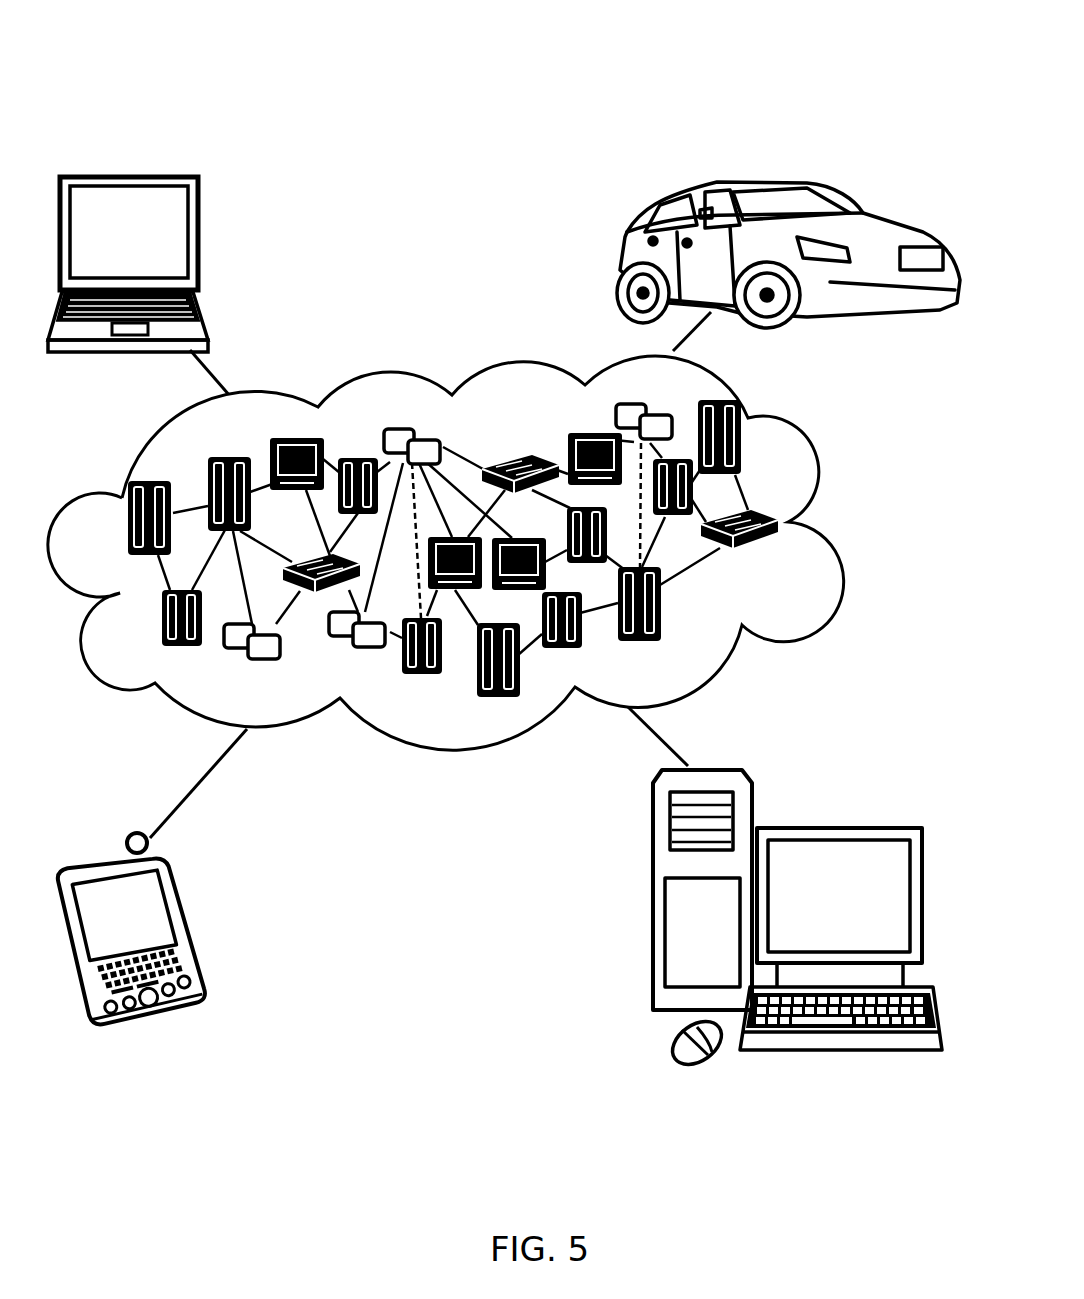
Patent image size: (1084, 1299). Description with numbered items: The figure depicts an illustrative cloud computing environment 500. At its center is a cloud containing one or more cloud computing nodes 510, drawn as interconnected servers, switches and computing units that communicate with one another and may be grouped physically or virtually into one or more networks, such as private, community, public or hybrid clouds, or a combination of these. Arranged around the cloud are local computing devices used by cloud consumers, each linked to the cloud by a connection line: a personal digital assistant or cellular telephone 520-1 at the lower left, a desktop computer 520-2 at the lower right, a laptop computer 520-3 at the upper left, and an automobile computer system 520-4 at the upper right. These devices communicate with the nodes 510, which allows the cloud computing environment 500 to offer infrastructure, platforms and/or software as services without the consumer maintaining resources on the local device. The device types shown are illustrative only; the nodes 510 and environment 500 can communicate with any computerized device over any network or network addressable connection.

The cloud computing environment 500 is at (782, 36).
The cloud computing nodes 510 is at (784, 559).
The personal digital assistant or cellular telephone 520-1 is at (187, 931).
The desktop computer 520-2 is at (847, 808).
The laptop computer 520-3 is at (200, 241).
The automobile computer system 520-4 is at (618, 255).